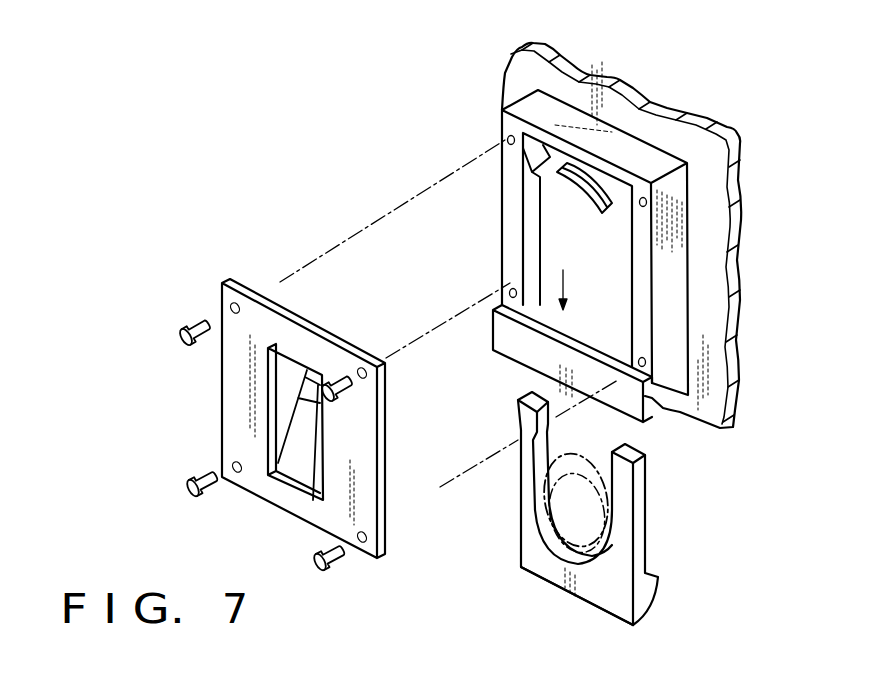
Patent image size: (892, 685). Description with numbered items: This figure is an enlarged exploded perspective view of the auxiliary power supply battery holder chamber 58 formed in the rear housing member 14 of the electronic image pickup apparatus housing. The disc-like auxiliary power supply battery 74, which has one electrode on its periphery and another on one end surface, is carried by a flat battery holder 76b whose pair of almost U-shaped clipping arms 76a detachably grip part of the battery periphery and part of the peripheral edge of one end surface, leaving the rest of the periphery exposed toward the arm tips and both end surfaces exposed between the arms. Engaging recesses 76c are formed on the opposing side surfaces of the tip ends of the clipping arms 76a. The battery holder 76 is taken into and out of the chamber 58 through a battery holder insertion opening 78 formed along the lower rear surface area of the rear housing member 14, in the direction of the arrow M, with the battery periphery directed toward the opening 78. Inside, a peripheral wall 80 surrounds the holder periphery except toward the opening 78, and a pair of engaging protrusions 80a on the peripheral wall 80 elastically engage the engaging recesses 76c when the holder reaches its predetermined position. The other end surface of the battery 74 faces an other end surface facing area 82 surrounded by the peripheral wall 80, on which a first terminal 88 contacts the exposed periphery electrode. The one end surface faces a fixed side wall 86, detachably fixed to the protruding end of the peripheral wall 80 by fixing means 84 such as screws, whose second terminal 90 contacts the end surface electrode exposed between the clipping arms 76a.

The rear housing member 14 is at (704, 205).
The auxiliary power supply battery holder chamber 58 is at (463, 145).
The auxiliary power supply battery 74 is at (583, 460).
The battery holder 76 is at (585, 511).
The clipping arms 76a is at (520, 505).
The flat battery holder 76b is at (537, 567).
The engaging recesses 76c is at (519, 420).
The battery holder insertion opening 78 is at (585, 335).
The peripheral wall 80 is at (614, 245).
The engaging protrusions 80a is at (520, 168).
The other end surface facing area 82 is at (548, 217).
The fixing means 84 is at (181, 331).
The fixed side wall 86 is at (281, 418).
The first terminal 88 is at (590, 187).
The second terminal 90 is at (297, 435).
The direction of movement M is at (532, 307).